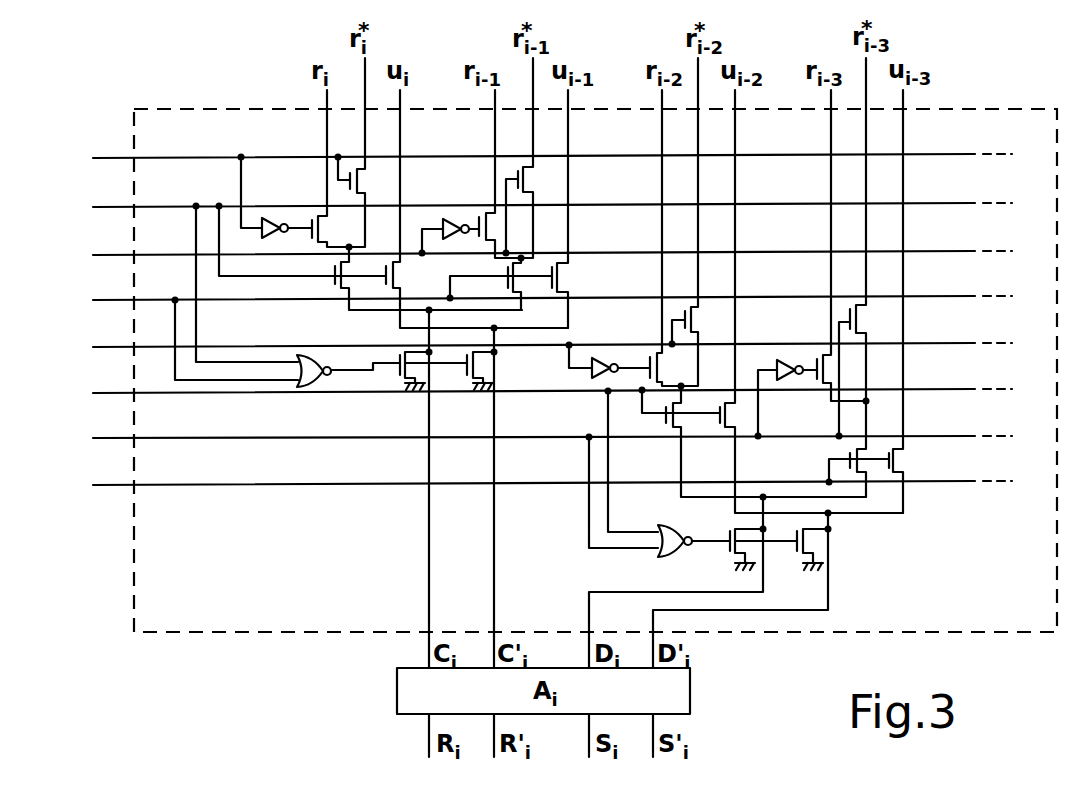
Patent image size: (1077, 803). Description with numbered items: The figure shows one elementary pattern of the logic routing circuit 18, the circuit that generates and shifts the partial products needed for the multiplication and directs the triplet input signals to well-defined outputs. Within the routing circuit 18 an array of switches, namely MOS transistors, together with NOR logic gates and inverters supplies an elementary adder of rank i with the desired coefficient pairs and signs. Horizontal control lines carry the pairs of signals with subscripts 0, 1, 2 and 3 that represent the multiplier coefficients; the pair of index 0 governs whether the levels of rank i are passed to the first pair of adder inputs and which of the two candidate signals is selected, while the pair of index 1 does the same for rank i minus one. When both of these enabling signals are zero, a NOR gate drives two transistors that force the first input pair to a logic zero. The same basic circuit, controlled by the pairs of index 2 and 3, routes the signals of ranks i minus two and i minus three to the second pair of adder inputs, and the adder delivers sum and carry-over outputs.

The logic routing circuit 18 is at (984, 107).
The s0/v0 control lines 0 is at (535, 178).
The s1/v1 control lines 1 is at (535, 274).
The s2/v2 control lines 2 is at (535, 366).
The s3/v3 control lines 3 is at (535, 458).